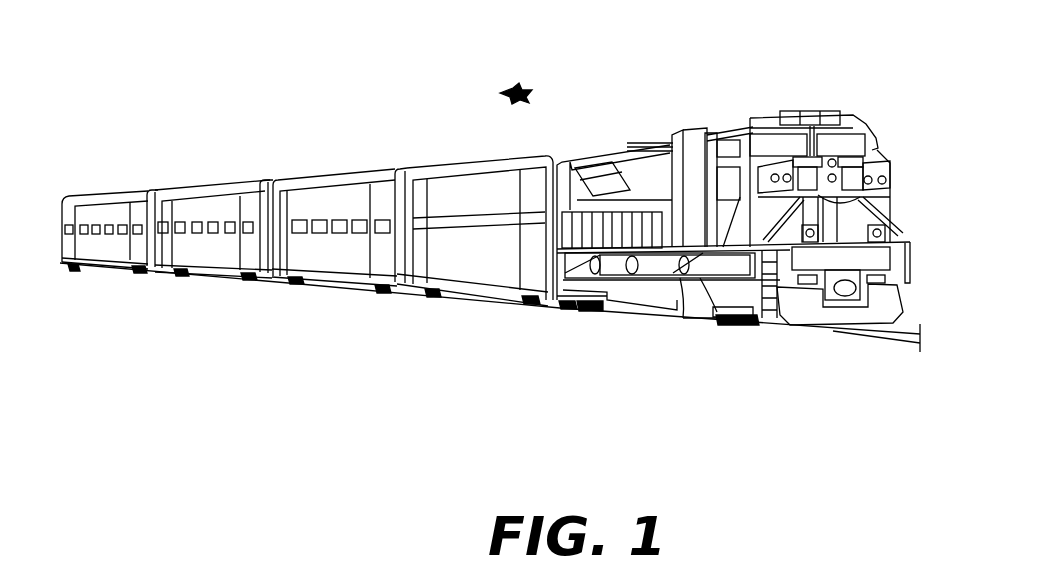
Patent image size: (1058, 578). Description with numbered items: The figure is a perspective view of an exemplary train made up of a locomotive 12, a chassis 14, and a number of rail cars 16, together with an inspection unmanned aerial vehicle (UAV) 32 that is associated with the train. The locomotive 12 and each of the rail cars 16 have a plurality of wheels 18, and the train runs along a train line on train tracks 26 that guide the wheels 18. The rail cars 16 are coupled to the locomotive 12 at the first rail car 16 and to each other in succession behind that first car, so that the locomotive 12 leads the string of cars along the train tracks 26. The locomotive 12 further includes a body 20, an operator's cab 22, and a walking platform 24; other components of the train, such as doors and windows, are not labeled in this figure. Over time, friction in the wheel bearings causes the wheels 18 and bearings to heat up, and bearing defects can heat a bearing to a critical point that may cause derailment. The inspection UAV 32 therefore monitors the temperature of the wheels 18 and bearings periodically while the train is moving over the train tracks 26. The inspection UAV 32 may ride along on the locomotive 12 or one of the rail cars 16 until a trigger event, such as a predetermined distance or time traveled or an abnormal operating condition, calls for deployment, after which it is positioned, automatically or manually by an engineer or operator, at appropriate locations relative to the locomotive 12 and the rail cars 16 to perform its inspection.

The locomotive 12 is at (753, 118).
The chassis 14 is at (591, 300).
The rail cars 16 is at (102, 263).
The wheels 18 is at (75, 272).
The body 20 is at (673, 140).
The operator's cab 22 is at (855, 125).
The walking platform 24 is at (677, 282).
The train tracks 26 is at (833, 332).
The inspection unmanned aerial vehicle (UAV) 32 is at (512, 88).